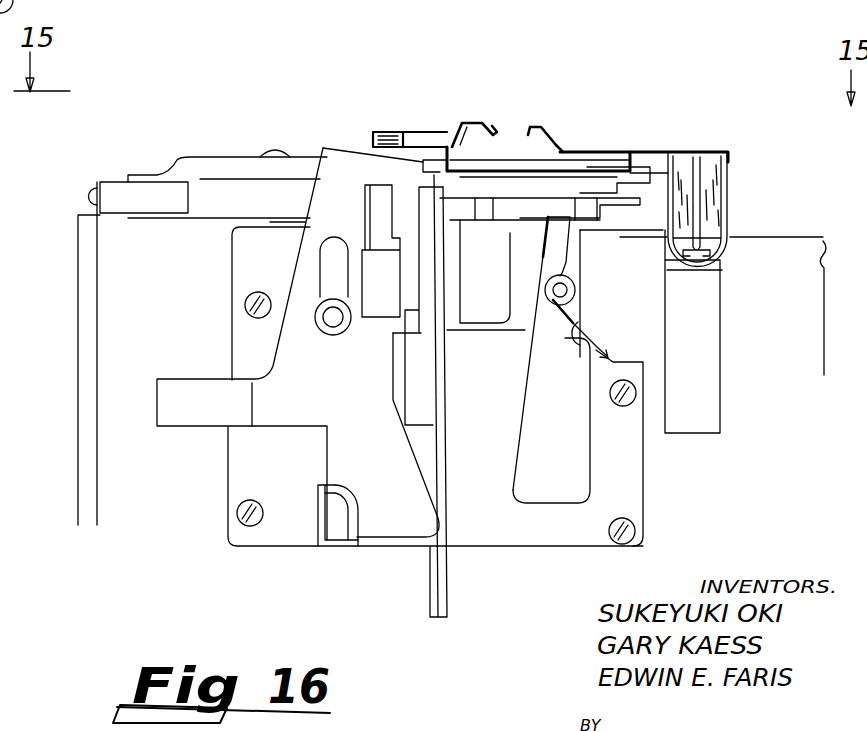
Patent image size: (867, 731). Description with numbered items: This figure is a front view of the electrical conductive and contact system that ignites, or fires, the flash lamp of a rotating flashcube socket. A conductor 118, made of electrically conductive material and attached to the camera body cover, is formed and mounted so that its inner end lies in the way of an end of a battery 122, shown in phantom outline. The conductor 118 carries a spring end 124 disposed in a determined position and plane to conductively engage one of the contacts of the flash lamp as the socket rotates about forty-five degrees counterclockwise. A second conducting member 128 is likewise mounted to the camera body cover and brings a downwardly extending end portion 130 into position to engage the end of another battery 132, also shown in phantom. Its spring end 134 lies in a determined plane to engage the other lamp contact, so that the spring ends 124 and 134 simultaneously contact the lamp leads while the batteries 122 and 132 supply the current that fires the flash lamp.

The conductor 118 is at (427, 133).
The spring end 124 is at (470, 124).
The spring end 134 is at (541, 122).
The second conducting member 128 is at (590, 149).
The downwardly extending end portion 130 is at (718, 205).
The battery 122 is at (718, 283).
The battery 132 is at (720, 333).